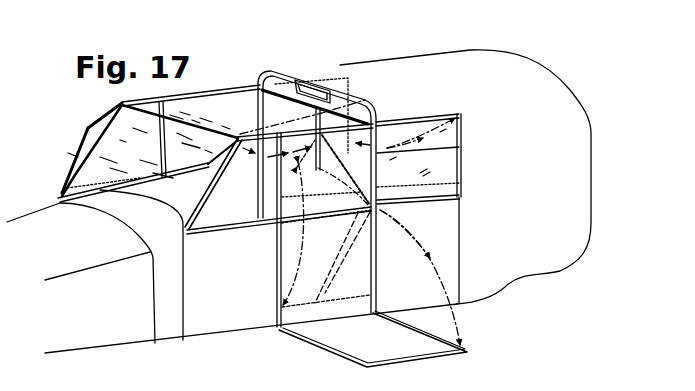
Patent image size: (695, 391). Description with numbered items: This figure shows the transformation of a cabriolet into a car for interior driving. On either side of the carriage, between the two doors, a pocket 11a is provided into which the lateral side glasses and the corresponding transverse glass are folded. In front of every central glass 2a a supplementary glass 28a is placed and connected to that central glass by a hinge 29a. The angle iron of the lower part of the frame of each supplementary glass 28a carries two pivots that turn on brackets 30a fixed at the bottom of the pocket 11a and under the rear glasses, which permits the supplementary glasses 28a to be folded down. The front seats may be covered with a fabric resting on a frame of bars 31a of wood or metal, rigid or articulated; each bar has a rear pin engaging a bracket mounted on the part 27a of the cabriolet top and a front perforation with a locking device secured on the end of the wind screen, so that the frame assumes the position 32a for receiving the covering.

The central glass 2a is at (232, 102).
The pocket 11a is at (277, 328).
The part of the cabriolet top 27a is at (334, 97).
The supplementary glass 28a is at (110, 143).
The hinge 29a is at (165, 99).
The brackets 30a is at (273, 227).
The bars 31a is at (365, 108).
The position of the bars / frame 32a is at (230, 85).